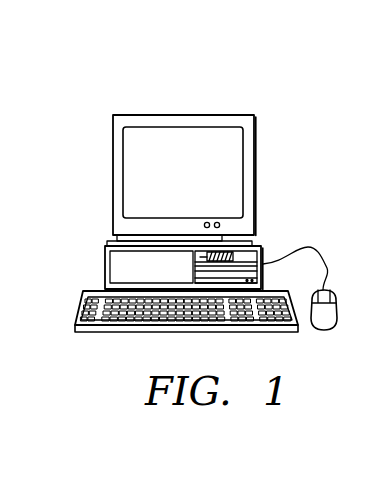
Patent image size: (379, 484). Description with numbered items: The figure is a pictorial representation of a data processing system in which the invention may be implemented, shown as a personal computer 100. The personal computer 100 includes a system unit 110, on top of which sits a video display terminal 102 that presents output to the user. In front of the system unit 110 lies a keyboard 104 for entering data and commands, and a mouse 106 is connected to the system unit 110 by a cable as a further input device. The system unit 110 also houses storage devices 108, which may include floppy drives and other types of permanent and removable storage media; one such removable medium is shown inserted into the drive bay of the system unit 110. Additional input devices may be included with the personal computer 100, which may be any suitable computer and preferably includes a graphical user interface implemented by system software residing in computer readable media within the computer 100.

The personal computer 100 is at (206, 86).
The video display terminal 102 is at (130, 172).
The keyboard 104 is at (102, 312).
The mouse 106 is at (322, 330).
The storage devices 108 is at (243, 258).
The system unit 110 is at (105, 270).